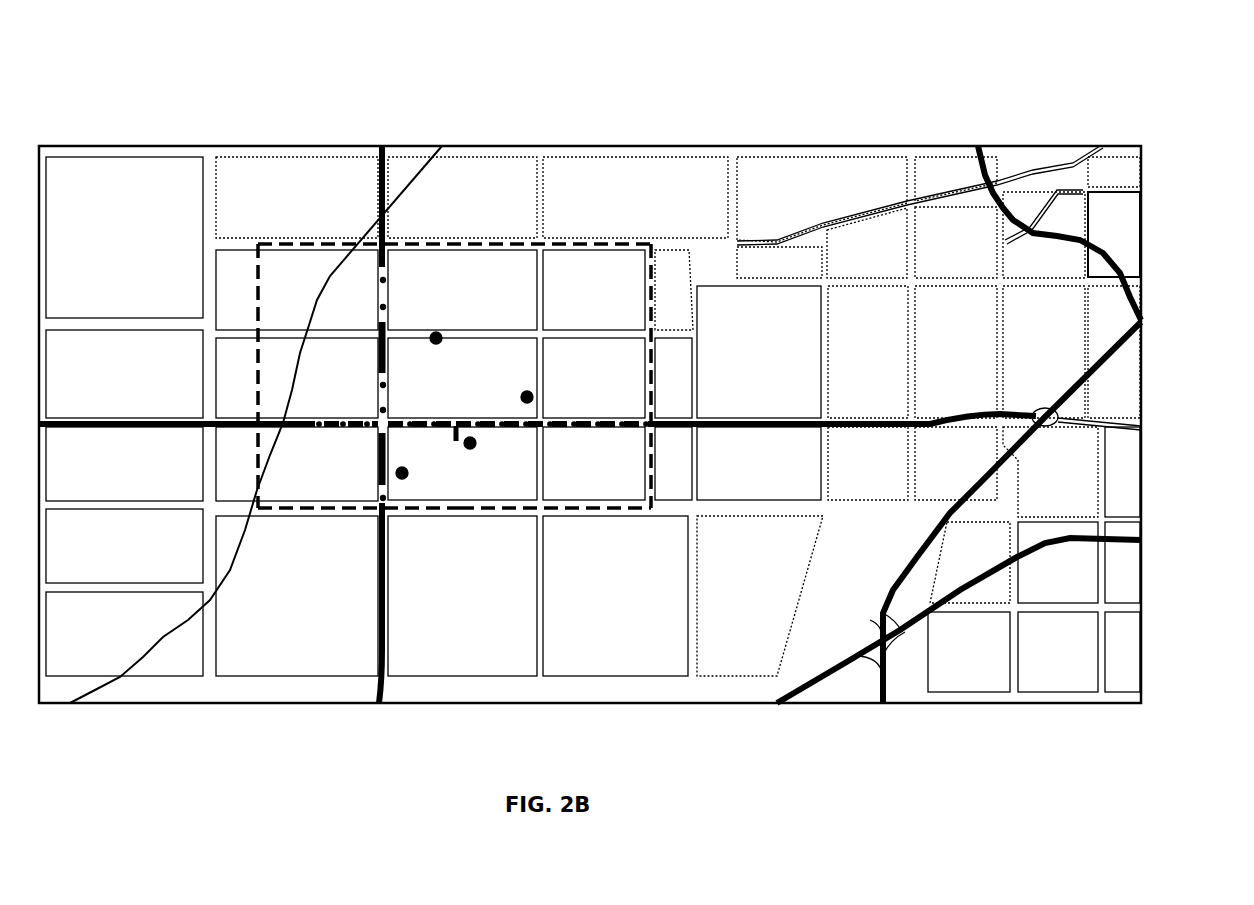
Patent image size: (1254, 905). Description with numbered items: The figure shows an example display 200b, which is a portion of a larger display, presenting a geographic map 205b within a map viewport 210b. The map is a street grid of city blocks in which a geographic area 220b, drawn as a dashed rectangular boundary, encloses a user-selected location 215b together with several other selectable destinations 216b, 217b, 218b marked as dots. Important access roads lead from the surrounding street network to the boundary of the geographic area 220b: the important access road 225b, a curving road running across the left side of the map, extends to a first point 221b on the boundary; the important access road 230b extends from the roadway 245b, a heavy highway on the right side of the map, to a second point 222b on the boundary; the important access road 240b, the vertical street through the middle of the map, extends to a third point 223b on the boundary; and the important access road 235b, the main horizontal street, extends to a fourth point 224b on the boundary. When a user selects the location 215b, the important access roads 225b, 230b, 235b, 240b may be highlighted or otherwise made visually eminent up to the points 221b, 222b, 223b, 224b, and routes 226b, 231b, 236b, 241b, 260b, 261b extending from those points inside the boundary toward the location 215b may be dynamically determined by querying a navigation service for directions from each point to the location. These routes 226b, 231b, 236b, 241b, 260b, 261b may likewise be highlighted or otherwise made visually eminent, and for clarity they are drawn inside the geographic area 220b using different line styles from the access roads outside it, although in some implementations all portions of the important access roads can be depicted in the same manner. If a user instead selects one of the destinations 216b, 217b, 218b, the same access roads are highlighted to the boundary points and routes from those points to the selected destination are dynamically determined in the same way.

The display 200b is at (650, 72).
The geographic map 205b is at (890, 173).
The map viewport 210b is at (770, 146).
The location 215b is at (480, 443).
The destination 216b is at (405, 480).
The destination 217b is at (436, 332).
The destination 218b is at (521, 397).
The geographic area 220b is at (623, 510).
The first point 221b is at (385, 244).
The second point 222b is at (655, 415).
The third point 223b is at (380, 506).
The fourth point 224b is at (257, 428).
The important access road 225b is at (281, 398).
The route 226b is at (378, 352).
The important access road 230b is at (857, 420).
The route 231b is at (558, 420).
The important access road 235b is at (117, 420).
The route 236b is at (324, 421).
The important access road 240b is at (385, 688).
The route 241b is at (380, 457).
The roadway 245b is at (1065, 396).
The route 260b is at (446, 424).
The route 261b is at (456, 441).